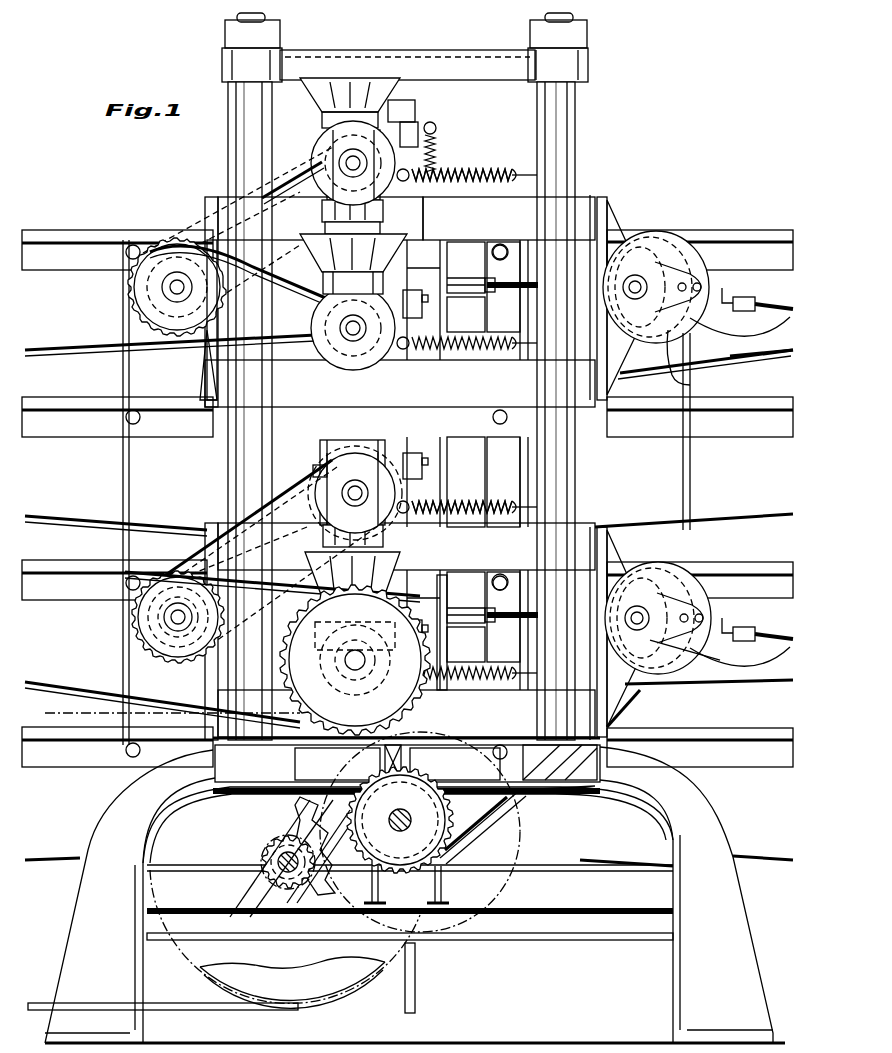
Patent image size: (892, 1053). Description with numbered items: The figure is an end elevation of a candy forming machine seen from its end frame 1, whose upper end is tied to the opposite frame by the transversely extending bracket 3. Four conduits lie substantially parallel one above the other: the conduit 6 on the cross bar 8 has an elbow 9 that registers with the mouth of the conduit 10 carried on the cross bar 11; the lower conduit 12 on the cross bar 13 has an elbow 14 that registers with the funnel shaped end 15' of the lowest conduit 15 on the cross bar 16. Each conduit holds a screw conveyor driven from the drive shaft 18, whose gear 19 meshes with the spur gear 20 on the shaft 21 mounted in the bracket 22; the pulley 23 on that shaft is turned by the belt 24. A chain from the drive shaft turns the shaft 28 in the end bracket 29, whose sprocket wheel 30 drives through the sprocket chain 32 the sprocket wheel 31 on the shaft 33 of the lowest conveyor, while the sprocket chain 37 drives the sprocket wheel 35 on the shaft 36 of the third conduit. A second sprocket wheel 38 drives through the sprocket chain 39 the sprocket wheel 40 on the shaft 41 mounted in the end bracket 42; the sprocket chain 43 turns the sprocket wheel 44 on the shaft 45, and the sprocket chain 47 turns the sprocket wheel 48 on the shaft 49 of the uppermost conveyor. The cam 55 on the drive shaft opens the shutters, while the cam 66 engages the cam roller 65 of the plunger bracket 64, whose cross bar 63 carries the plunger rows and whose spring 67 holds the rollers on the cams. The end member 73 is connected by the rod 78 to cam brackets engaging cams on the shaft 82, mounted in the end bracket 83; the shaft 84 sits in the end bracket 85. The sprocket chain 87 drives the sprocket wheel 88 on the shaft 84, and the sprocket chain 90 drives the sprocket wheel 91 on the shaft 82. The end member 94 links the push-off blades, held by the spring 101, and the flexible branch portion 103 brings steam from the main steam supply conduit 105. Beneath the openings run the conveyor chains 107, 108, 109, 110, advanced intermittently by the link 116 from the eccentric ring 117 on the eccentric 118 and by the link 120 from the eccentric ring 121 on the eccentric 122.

The end frame 1 is at (580, 118).
The transversely extending bracket 3 is at (455, 55).
The conduit 6 is at (322, 146).
The cross bar 8 is at (509, 218).
The elbow 9 is at (330, 118).
The conduit 10 is at (300, 222).
The cross bar 11 is at (400, 383).
The lower conduit 12 is at (390, 478).
The cross bar 13 is at (400, 631).
The elbow 14 is at (350, 496).
The lower conduit 15 is at (346, 668).
The funnel shaped end 15' is at (359, 564).
The cross bar 16 is at (406, 713).
The drive shaft 18 is at (400, 820).
The gear 19 is at (300, 815).
The spur gear 20 is at (278, 845).
The shaft 21 is at (280, 860).
The bracket 22 is at (250, 885).
The pulley 23 is at (300, 990).
The belt 24 is at (175, 1010).
The shaft 28 is at (175, 612).
The end bracket 29 is at (200, 535).
The sprocket wheel 30 is at (150, 625).
The sprocket wheel 31 is at (418, 600).
The sprocket chain 32 is at (276, 572).
The shaft 33 is at (355, 650).
The sprocket wheel 35 is at (313, 468).
The shaft 36 is at (325, 520).
The sprocket chain 37 is at (290, 490).
The sprocket wheel 38 is at (140, 660).
The sprocket chain 39 is at (122, 376).
The sprocket wheel 40 is at (140, 320).
The shaft 41 is at (170, 288).
The end bracket 42 is at (200, 212).
The sprocket chain 43 is at (240, 350).
The sprocket wheel 44 is at (318, 298).
The shaft 45 is at (350, 340).
The sprocket chain 47 is at (300, 170).
The sprocket wheel 48 is at (400, 110).
The shaft 49 is at (385, 205).
The cam 55 is at (406, 884).
The cross bar 63 is at (436, 126).
The plunger bracket 64 is at (380, 755).
The cam roller 65 is at (410, 760).
The cam 66 is at (470, 840).
The spring 67 is at (437, 150).
The end member 73 is at (444, 300).
The rod 78 is at (505, 278).
The shaft 82 is at (640, 278).
The end bracket 83 is at (625, 215).
The shaft 84 is at (645, 660).
The end bracket 85 is at (612, 535).
The sprocket chain 87 is at (512, 800).
The sprocket wheel 88 is at (625, 700).
The sprocket chain 90 is at (692, 463).
The sprocket wheel 91 is at (625, 365).
The end member 94 is at (518, 320).
The spring 101 is at (505, 170).
The flexible branch portion 103 is at (440, 495).
The main steam supply conduit 105 is at (416, 984).
The conveyor chain 107 is at (738, 357).
The conveyor chain 108 is at (772, 520).
The conveyor chain 109 is at (740, 688).
The conveyor chain 110 is at (750, 864).
The link 116 is at (793, 240).
The eccentric ring 117 is at (745, 300).
The eccentric 118 is at (690, 384).
The link 120 is at (783, 632).
The eccentric ring 121 is at (678, 652).
The eccentric 122 is at (755, 665).